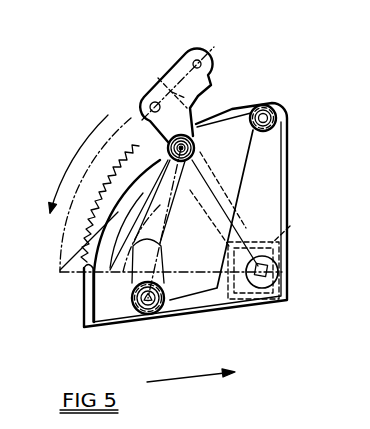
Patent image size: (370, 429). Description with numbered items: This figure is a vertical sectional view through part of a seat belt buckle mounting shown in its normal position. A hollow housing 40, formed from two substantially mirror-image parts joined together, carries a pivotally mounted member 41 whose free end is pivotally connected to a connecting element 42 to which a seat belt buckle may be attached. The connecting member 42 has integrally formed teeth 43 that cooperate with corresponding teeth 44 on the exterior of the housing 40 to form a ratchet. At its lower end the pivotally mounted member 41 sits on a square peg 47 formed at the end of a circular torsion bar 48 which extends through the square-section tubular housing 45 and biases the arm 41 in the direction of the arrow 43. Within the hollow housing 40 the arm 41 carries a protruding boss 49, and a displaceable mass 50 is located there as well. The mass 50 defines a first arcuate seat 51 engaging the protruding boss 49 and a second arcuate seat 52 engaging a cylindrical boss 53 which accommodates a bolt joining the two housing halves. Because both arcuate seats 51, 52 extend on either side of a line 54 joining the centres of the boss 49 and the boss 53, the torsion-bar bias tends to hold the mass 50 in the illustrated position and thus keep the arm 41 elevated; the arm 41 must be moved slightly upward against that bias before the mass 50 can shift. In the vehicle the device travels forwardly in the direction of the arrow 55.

The housing 40 is at (290, 193).
The pivotally mounted member 41 is at (140, 100).
The connecting element 42 is at (187, 60).
The teeth 43 is at (78, 147).
The teeth 44 is at (84, 225).
The tubular housing 45 is at (292, 225).
The square peg 47 is at (268, 268).
The torsion bar 48 is at (278, 277).
The protruding boss 49 is at (222, 100).
The displaceable mass 50 is at (237, 150).
The first arcuate seat 51 is at (178, 164).
The second arcuate seat 52 is at (177, 272).
The cylindrical boss 53 is at (178, 306).
The line 54 is at (97, 288).
The arrow 55 is at (175, 378).